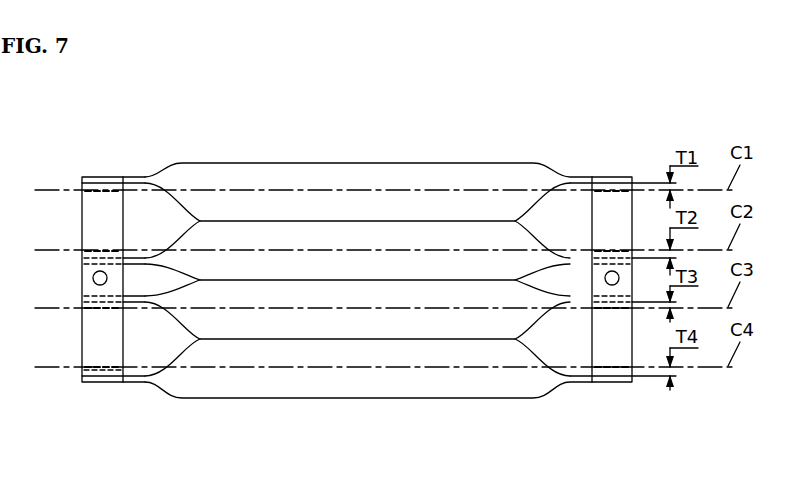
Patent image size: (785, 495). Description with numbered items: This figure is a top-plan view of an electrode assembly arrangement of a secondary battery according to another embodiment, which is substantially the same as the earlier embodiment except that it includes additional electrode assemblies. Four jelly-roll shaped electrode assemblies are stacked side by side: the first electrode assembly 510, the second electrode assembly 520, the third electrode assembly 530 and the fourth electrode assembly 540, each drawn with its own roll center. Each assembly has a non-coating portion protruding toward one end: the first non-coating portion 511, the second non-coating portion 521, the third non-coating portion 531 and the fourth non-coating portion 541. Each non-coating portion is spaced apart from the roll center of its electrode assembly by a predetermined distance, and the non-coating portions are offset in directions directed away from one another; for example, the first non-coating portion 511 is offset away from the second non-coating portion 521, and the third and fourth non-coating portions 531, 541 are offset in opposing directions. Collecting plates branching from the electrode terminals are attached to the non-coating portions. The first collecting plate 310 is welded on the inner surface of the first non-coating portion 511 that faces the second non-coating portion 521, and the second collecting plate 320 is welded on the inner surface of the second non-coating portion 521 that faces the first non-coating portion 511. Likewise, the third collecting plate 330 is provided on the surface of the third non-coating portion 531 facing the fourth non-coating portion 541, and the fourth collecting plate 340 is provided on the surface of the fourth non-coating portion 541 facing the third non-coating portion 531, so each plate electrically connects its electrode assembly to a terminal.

The first collecting plate 310 is at (127, 178).
The second collecting plate 320 is at (87, 252).
The third collecting plate 330 is at (87, 308).
The fourth collecting plate 340 is at (118, 372).
The first electrode assembly 510 is at (318, 160).
The first positive electrode non-coating portion 511 is at (99, 177).
The second electrode assembly 520 is at (488, 227).
The second positive electrode non-coating portion 521 is at (85, 262).
The third electrode assembly 530 is at (488, 333).
The third non-coating portion 531 is at (84, 299).
The fourth electrode assembly 540 is at (320, 401).
The fourth non-coating portion 541 is at (93, 383).